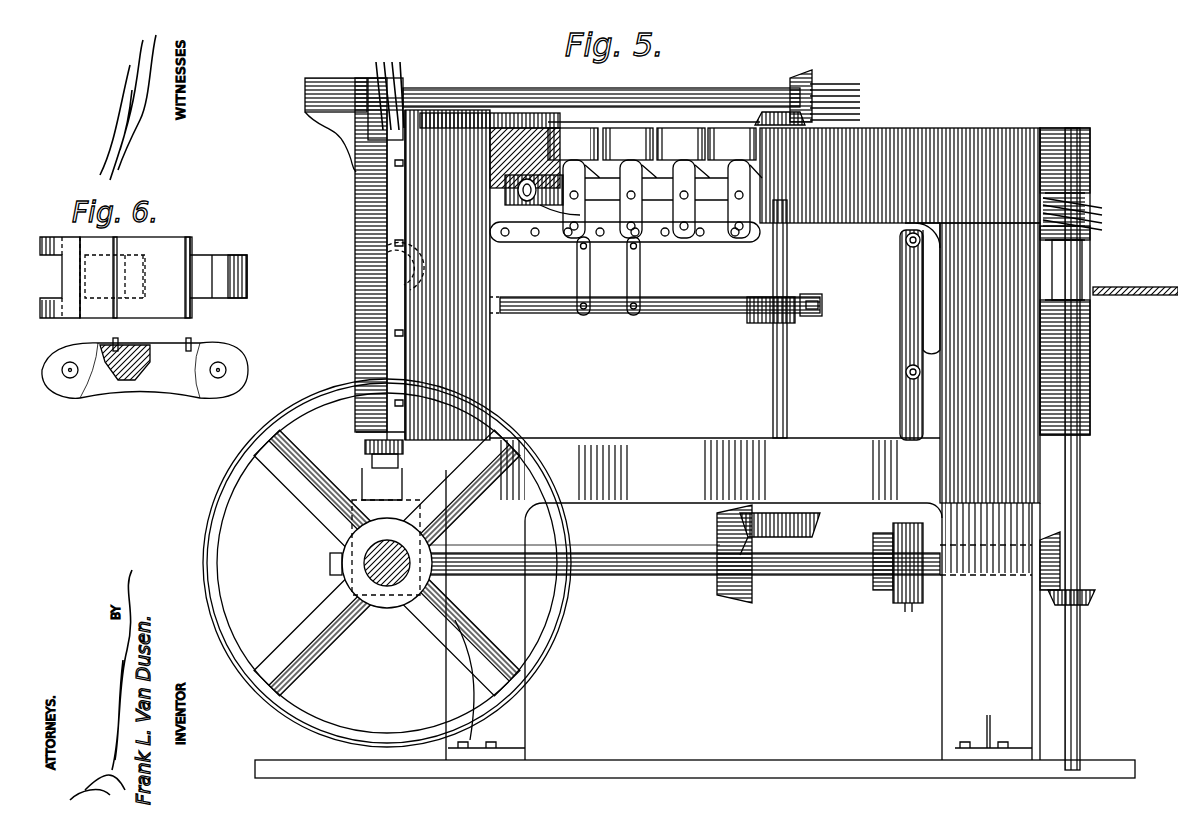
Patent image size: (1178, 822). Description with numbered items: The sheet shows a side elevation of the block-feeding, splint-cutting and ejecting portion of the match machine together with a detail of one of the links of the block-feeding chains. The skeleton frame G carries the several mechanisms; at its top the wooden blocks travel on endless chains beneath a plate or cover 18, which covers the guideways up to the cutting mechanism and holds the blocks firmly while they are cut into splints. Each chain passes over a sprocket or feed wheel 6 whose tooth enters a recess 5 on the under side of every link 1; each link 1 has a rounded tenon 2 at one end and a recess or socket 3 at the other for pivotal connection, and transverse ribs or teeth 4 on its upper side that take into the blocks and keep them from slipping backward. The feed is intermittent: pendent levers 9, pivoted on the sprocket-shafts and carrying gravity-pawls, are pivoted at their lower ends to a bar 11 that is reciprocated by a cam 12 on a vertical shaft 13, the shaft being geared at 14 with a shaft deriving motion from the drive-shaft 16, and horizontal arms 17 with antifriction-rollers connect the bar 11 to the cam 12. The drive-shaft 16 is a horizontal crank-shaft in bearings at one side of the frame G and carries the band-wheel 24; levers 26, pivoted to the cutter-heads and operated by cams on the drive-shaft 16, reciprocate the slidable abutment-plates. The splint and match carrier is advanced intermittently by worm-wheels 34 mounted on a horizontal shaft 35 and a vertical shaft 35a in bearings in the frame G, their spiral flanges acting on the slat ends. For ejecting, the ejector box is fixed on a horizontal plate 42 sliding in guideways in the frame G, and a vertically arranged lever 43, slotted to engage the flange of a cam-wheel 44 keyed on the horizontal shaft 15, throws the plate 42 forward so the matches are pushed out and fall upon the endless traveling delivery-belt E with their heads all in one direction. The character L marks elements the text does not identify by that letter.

In FIG. 6, the link 1 is at (145, 317).
In FIG. 6, the rounded tenon 2 is at (247, 278).
In FIG. 6, the recess or socket 3 is at (60, 319).
In FIG. 6, the transverse ribs or teeth 4 is at (113, 277).
In FIG. 6, the recess 5 is at (125, 364).
In FIG. 5, the sprocket or feed wheel 6 is at (545, 190).
In FIG. 5, the pendent lever 9 is at (388, 208).
In FIG. 5, the bar 11 is at (700, 297).
In FIG. 5, the cam 12 is at (808, 295).
In FIG. 5, the vertical shaft 13 is at (788, 366).
In FIG. 5, the gearing 14 is at (768, 554).
In FIG. 5, the horizontal shaft 15 is at (709, 561).
In FIG. 5, the drive-shaft 16 is at (330, 564).
In FIG. 5, the horizontal arm 17 is at (755, 323).
In FIG. 5, the plate or cover 18 is at (455, 114).
In FIG. 5, the band-wheel 24 is at (208, 540).
In FIG. 5, the lever 26 is at (356, 450).
In FIG. 5, the worm-wheel 34 is at (1097, 200).
In FIG. 5, the horizontal worm-wheel shaft 35 is at (538, 84).
In FIG. 5, the vertical worm-wheel shaft 35a is at (1083, 496).
In FIG. 5, the horizontal plate 42 is at (893, 237).
In FIG. 5, the lever 43 is at (900, 305).
In FIG. 5, the cam-wheel 44 is at (896, 604).
In FIG. 5, the endless traveling delivery-belt E is at (1135, 276).
In FIG. 5, the skeleton frame G is at (748, 766).
In FIG. 5, the boxes L is at (651, 200).